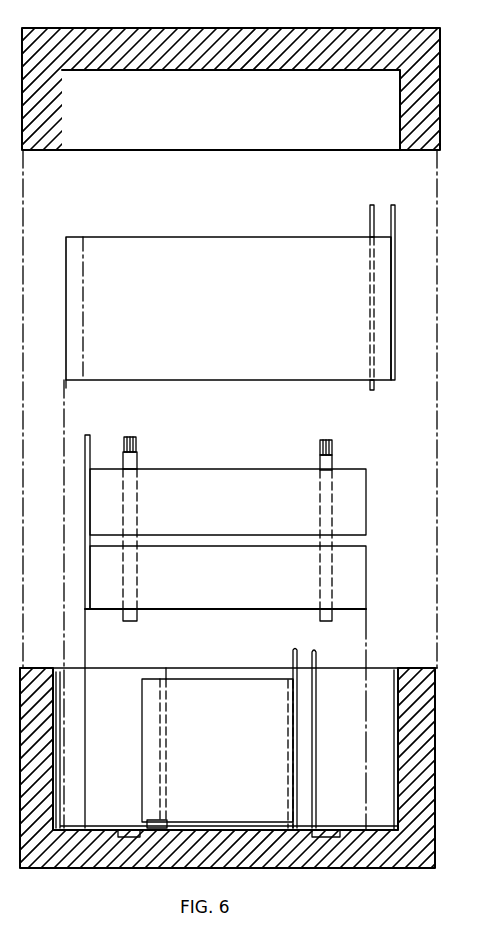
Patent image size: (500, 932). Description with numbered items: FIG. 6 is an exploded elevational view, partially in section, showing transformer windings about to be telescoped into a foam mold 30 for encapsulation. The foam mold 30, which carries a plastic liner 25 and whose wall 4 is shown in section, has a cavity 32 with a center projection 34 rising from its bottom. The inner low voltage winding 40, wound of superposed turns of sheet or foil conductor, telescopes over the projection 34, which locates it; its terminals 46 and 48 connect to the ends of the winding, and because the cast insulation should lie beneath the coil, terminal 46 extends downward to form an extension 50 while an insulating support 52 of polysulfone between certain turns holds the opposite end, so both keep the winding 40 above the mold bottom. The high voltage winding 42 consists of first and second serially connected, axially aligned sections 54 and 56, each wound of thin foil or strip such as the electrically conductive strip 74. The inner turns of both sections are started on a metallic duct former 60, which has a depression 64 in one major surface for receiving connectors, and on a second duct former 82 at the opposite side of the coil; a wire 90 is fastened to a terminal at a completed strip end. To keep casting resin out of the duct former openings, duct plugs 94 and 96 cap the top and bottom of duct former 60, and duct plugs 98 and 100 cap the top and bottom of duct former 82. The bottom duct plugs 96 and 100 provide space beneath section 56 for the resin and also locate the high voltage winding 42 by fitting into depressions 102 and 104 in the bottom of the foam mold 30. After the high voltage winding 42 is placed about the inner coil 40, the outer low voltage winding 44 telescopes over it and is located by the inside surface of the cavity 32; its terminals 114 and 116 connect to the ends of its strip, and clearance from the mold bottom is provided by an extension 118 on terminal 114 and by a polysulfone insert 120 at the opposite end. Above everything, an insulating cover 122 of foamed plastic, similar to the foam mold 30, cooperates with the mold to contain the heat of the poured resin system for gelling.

The housing wall 4 is at (3, 806).
The plastic liner 25 is at (22, 672).
The foam mold 30 is at (393, 868).
The cavity 32 is at (382, 685).
The projection 34 is at (228, 670).
The inner low voltage winding 40 is at (142, 700).
The high voltage winding 42 is at (248, 539).
The outer low voltage winding 44 is at (344, 235).
The terminal 46 is at (293, 655).
The terminal 48 is at (318, 661).
The extension 50 is at (306, 828).
The support 52 is at (143, 822).
The first section 54 is at (366, 493).
The second section 56 is at (366, 578).
The duct former 60 is at (140, 480).
The depression 64 is at (0, 36).
The electrically conductive strip 74 is at (0, 92).
The duct former 82 is at (318, 490).
The wire 90 is at (86, 436).
The duct plug 94 is at (123, 462).
The duct plug 96 is at (138, 616).
The duct plug 98 is at (333, 463).
The duct plug 100 is at (333, 618).
The depression 102 is at (128, 830).
The depression 104 is at (320, 840).
The terminal 114 is at (372, 205).
The terminal 116 is at (396, 205).
The extension 118 is at (372, 391).
The polysulfone insert 120 is at (70, 383).
The insulating cover 122 is at (323, 30).